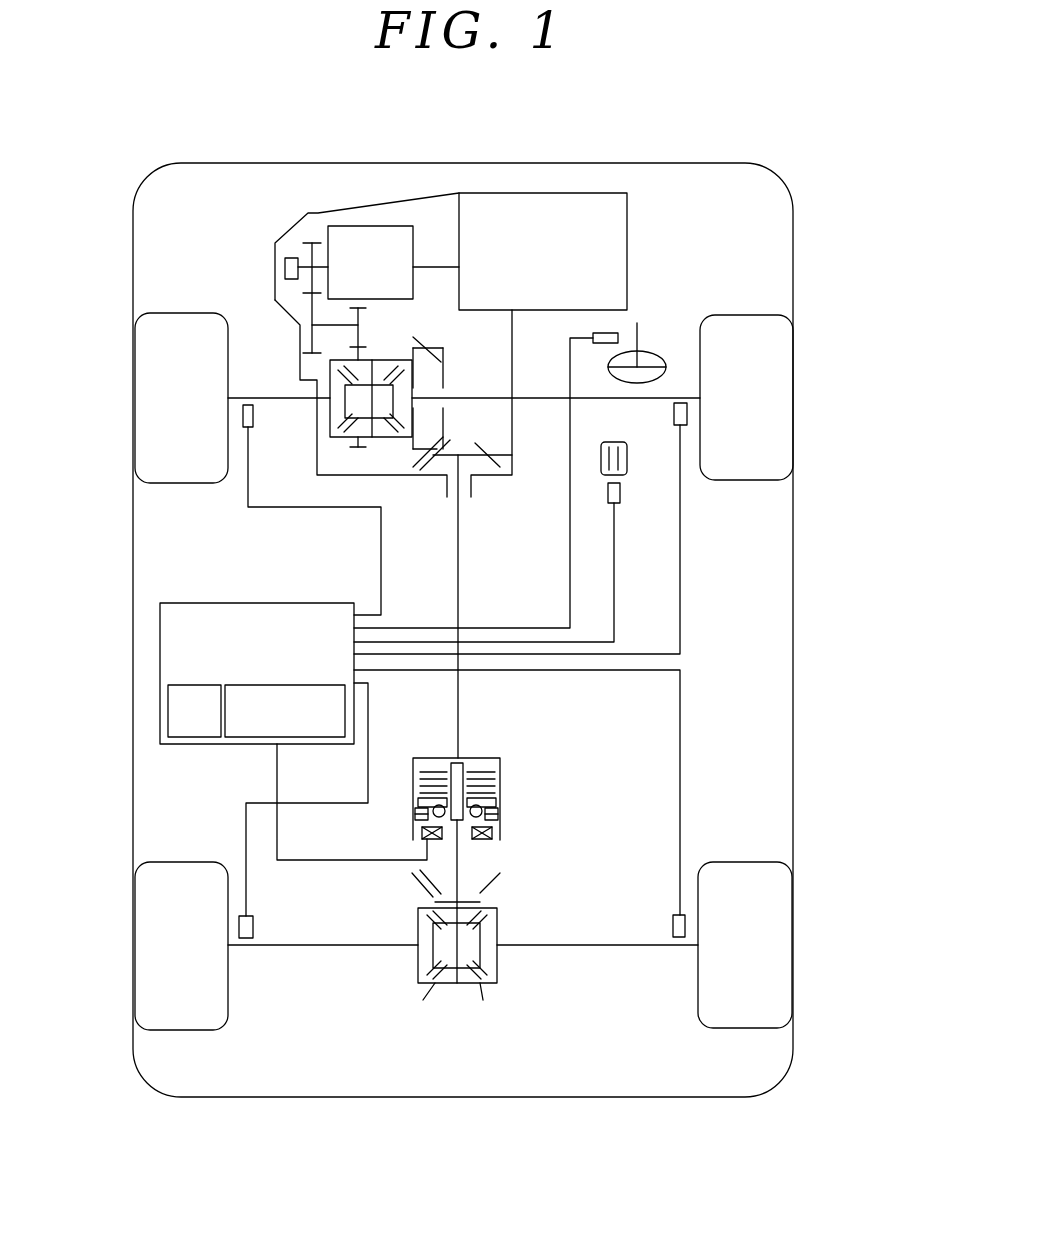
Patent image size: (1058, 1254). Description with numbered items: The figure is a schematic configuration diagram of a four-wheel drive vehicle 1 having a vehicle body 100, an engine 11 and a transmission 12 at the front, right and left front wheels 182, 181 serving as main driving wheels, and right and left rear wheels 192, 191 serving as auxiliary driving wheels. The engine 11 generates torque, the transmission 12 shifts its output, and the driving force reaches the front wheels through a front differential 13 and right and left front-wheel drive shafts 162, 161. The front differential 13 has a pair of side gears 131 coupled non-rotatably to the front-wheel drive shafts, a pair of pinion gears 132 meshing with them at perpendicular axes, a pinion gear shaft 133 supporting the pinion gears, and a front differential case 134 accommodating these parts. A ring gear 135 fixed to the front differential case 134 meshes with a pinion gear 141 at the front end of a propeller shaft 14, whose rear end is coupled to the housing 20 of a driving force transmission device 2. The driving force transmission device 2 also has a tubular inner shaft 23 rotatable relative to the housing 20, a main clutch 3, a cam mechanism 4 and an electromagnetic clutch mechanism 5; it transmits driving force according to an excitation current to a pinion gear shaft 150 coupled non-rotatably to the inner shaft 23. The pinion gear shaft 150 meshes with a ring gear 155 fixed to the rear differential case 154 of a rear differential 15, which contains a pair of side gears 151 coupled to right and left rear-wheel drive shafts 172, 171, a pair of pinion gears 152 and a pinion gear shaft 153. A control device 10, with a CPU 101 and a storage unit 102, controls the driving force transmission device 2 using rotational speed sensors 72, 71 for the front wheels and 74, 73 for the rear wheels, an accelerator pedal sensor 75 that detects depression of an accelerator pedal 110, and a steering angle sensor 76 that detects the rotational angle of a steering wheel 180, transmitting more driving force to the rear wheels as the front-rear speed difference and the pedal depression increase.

The four-wheel drive vehicle 1 is at (497, 584).
The vehicle body 100 is at (795, 272).
The engine 11 is at (575, 193).
The transmission 12 is at (362, 226).
The front differential 13 is at (369, 396).
The side gears 131 is at (342, 410).
The pinion gears 132 is at (377, 377).
The pinion gear shaft 133 is at (370, 398).
The front differential case 134 is at (340, 358).
The ring gear 135 is at (427, 347).
The pinion gear 141 is at (495, 462).
The propeller shaft 14 is at (459, 576).
The left front-wheel drive shaft 161 is at (288, 395).
The right front-wheel drive shaft 162 is at (467, 395).
The left rear-wheel drive shaft 171 is at (327, 947).
The right rear-wheel drive shaft 172 is at (640, 947).
The left front wheel 181 is at (147, 373).
The right front wheel 182 is at (784, 375).
The left rear wheel 191 is at (147, 966).
The right rear wheel 192 is at (784, 966).
The steering wheel 180 is at (647, 356).
The accelerator pedal 110 is at (611, 442).
The steering angle sensor 76 is at (612, 333).
The accelerator pedal sensor 75 is at (608, 503).
The rotational speed sensor 71 is at (250, 405).
The rotational speed sensor 72 is at (680, 403).
The rotational speed sensor 73 is at (253, 927).
The rotational speed sensor 74 is at (673, 927).
The control device 10 is at (253, 675).
The central processing unit 101 is at (183, 737).
The storage unit 102 is at (247, 737).
The driving force transmission device 2 is at (411, 782).
The main clutch 3 is at (500, 778).
The housing 20 is at (437, 758).
The inner shaft 23 is at (459, 763).
The cam mechanism 4 is at (418, 802).
The electromagnetic clutch mechanism 5 is at (499, 823).
The pinion gear shaft 150 is at (463, 871).
The rear differential 15 is at (458, 952).
The side gears 151 is at (487, 932).
The pinion gears 152 is at (483, 920).
The pinion gear shaft 153 is at (433, 947).
The rear differential case 154 is at (470, 985).
The ring gear 155 is at (413, 888).